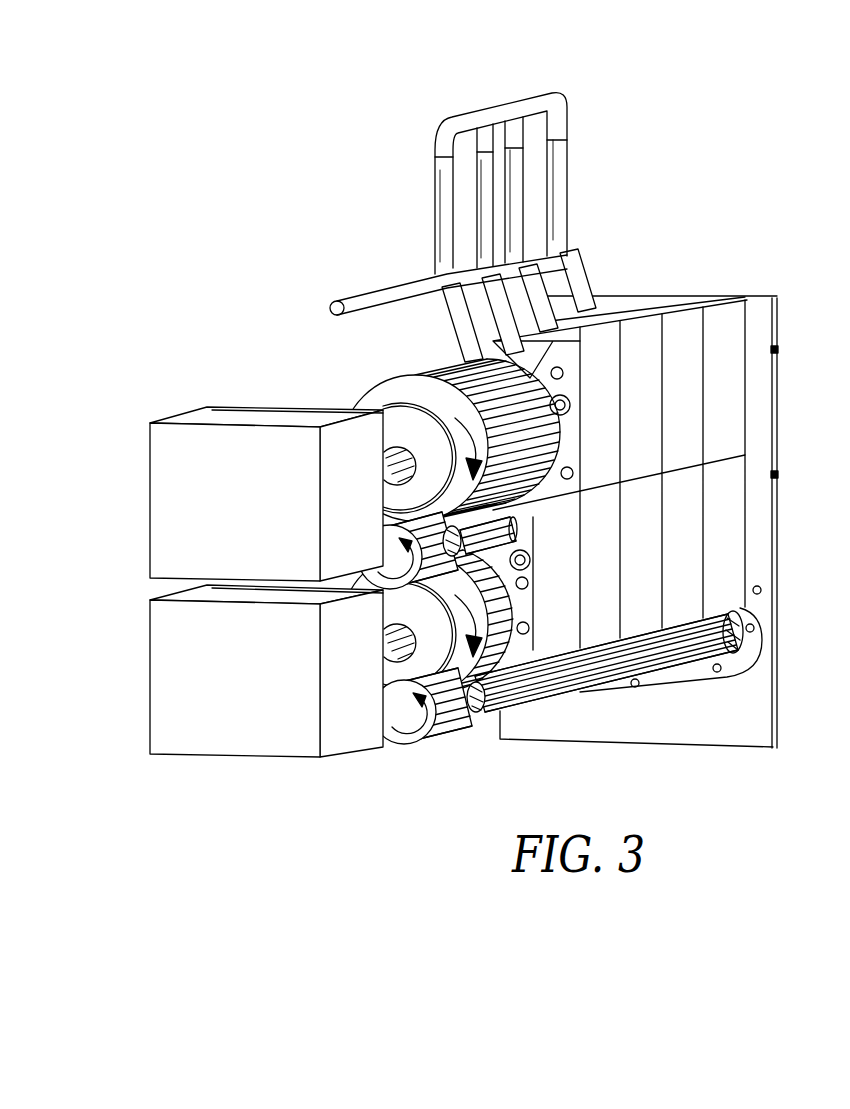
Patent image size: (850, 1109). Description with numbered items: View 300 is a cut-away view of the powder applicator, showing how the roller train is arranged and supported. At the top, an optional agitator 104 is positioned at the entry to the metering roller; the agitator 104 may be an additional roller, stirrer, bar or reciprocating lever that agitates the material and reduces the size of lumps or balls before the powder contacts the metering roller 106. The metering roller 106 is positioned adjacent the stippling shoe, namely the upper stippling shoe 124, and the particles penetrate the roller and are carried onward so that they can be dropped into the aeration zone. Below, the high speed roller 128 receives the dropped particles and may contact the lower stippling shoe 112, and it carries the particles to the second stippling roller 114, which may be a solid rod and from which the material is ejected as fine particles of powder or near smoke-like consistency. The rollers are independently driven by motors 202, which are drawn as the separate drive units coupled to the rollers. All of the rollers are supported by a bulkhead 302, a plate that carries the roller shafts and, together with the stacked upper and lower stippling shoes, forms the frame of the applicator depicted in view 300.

The agitator 104 is at (530, 96).
The metering roll 106 is at (378, 382).
The lower stippling shoe 112 is at (722, 510).
The second stippling roller 114 is at (750, 628).
The upper stippling shoe 124 is at (723, 382).
The high speed roller 128 is at (487, 717).
The motors 202 is at (160, 520).
The view 300 is at (755, 223).
The bulkhead 302 is at (723, 713).